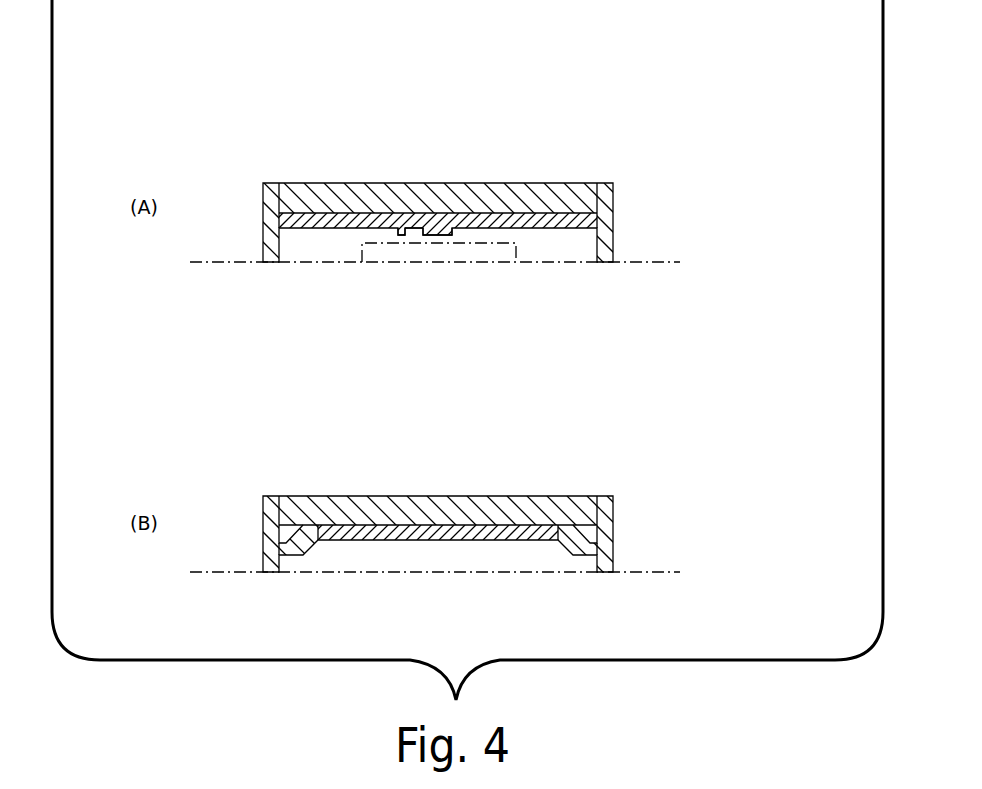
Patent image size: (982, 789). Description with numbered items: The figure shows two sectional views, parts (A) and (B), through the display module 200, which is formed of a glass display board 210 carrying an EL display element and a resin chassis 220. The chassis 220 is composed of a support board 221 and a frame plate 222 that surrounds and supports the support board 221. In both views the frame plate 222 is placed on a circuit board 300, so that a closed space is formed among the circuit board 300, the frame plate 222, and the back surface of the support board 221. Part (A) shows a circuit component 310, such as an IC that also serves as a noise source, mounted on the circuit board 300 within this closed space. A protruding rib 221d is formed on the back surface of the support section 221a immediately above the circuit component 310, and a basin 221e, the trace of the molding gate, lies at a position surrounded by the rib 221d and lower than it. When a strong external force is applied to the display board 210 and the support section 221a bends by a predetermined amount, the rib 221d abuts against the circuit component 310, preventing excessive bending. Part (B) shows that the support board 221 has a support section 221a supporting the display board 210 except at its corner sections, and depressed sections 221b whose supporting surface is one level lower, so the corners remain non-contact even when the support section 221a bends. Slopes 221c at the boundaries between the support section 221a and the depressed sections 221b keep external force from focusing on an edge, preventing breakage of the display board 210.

The display module 200 is at (446, 303).
The display board 210 is at (518, 183).
The chassis 220 is at (616, 546).
The support board 221 is at (435, 344).
The support section 221a is at (490, 523).
The depressed section 221b is at (288, 530).
The slope 221c is at (300, 545).
The rib 221d is at (396, 244).
The basin 221e is at (419, 243).
The frame plate 222 is at (600, 183).
The circuit board 300 is at (656, 259).
The circuit component 310 is at (489, 250).